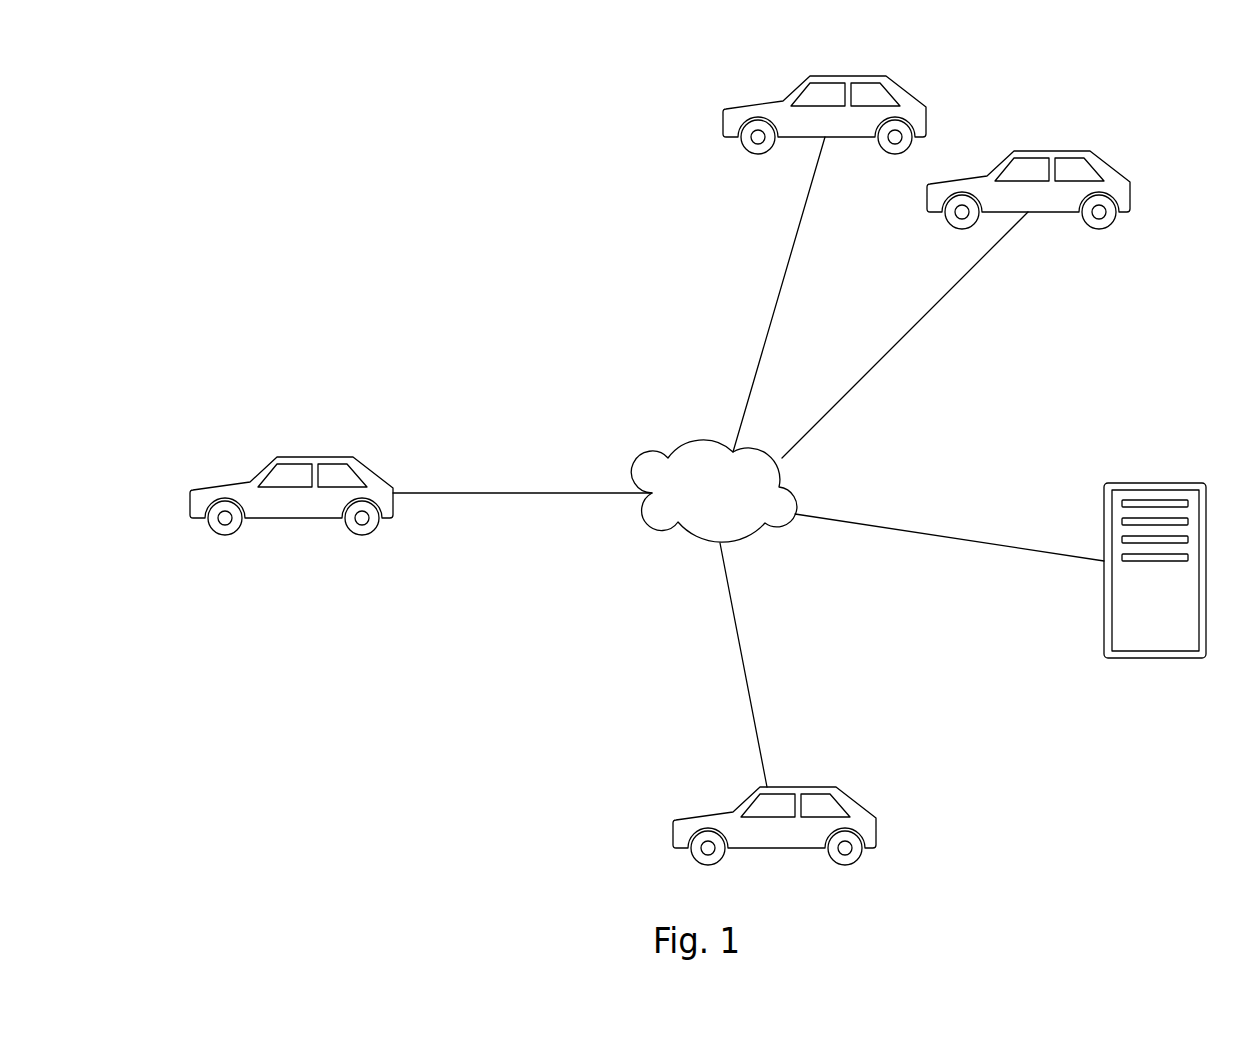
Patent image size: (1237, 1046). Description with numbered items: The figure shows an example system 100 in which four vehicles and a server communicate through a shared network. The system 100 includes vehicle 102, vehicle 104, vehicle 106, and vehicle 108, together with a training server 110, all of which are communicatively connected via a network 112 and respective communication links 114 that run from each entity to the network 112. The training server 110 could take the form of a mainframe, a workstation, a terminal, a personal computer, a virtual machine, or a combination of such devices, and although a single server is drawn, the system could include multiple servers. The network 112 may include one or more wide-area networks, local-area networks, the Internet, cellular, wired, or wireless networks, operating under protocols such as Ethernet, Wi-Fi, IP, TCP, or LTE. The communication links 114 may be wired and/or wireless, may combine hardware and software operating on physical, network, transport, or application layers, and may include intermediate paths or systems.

The system 100 is at (236, 119).
The vehicle 102 is at (291, 479).
The vehicle 104 is at (824, 98).
The vehicle 106 is at (1028, 173).
The vehicle 108 is at (774, 809).
The training server 110 is at (1178, 483).
The network 112 is at (673, 451).
The communication links 114 is at (495, 493).